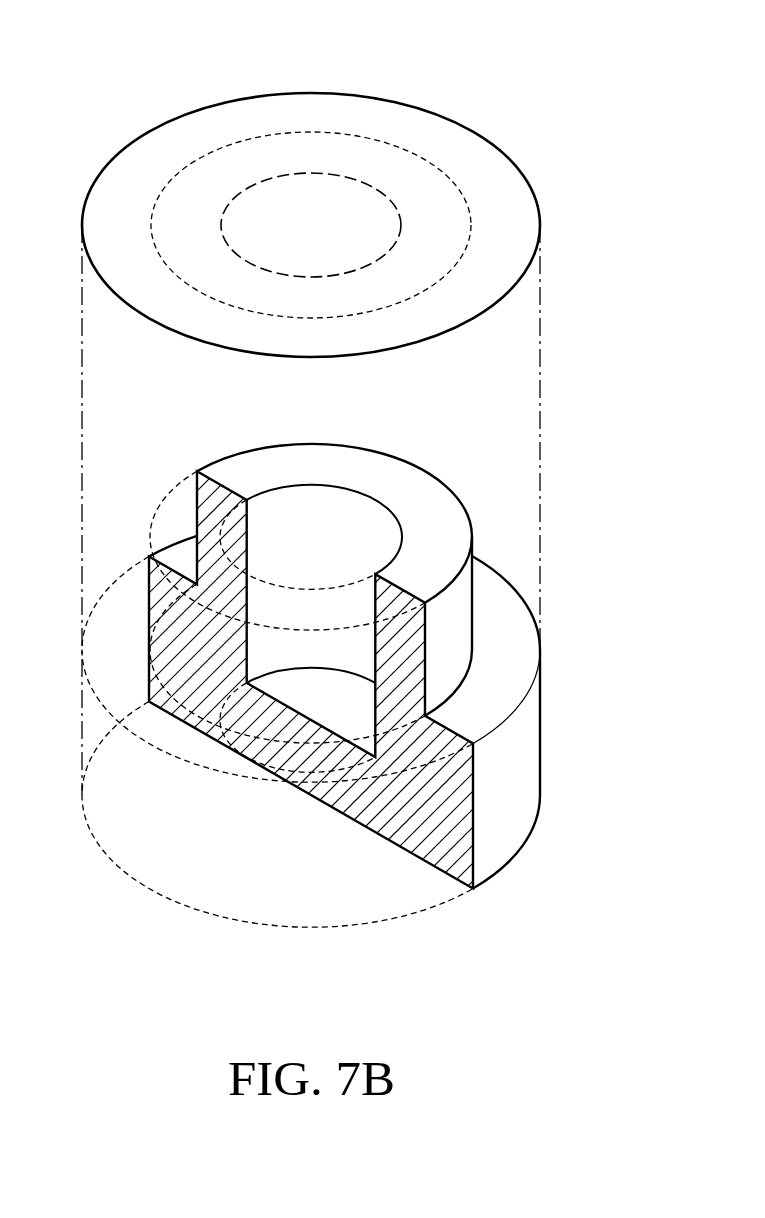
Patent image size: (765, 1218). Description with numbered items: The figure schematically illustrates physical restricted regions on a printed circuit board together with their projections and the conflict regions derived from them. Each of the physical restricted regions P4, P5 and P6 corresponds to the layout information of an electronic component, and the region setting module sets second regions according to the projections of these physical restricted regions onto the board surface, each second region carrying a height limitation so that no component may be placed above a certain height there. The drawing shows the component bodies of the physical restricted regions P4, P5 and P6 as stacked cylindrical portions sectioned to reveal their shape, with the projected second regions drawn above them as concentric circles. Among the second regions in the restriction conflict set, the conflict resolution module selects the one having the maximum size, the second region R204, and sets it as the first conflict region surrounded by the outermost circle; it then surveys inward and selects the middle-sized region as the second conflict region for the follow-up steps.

The second region R204 is at (383, 192).
The physical restricted region P4 is at (540, 657).
The physical restricted region P5 is at (327, 722).
The physical restricted region P6 is at (388, 590).